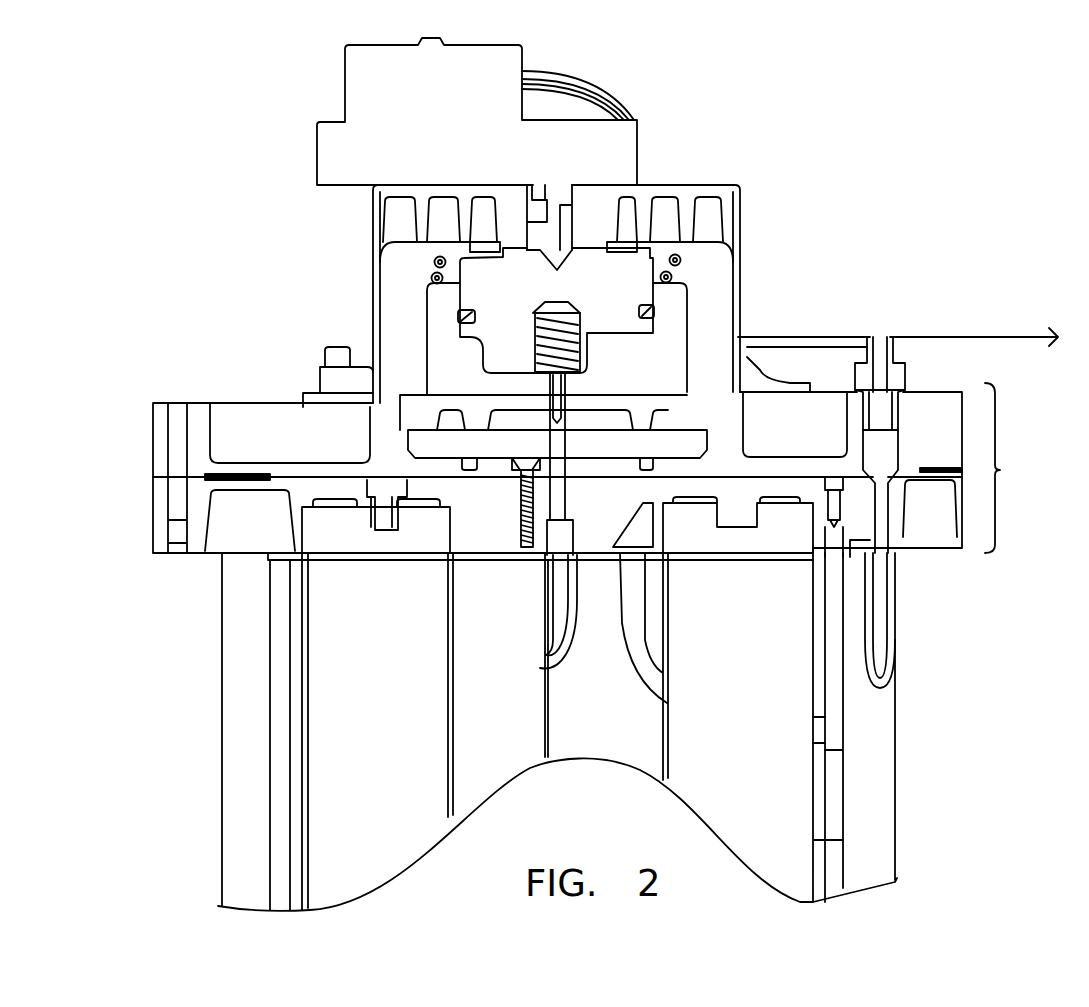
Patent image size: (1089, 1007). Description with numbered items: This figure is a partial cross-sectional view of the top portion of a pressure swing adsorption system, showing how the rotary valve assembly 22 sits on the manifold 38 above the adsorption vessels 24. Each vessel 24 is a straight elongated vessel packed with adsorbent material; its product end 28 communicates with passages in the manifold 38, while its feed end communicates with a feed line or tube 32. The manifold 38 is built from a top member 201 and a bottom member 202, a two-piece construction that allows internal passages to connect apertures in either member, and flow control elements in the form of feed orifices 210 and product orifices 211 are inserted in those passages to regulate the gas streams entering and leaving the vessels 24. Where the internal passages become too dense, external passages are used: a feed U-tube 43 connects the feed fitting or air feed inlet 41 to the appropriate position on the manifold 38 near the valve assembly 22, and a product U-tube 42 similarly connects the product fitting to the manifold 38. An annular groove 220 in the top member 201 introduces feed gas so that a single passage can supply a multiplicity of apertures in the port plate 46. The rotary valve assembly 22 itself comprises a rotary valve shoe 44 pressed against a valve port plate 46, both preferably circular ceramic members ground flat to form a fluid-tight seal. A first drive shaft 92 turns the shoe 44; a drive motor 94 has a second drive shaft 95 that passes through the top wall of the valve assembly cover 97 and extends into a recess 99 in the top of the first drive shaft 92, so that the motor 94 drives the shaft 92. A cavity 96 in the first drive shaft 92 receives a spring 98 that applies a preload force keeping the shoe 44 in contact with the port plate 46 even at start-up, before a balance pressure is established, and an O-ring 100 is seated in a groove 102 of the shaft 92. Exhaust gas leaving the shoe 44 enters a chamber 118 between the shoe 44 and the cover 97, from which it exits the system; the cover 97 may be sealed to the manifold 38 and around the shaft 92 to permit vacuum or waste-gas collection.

The rotary valve assembly 22 is at (407, 300).
The adsorption vessel 24 is at (843, 840).
The product end 28 is at (725, 608).
The feed line or tube 32 is at (843, 780).
The manifold 38 is at (997, 470).
The feed fitting or air feed inlet 41 is at (890, 337).
The product U-tube 42 is at (533, 670).
The feed U-tube 43 is at (873, 692).
The rotary valve shoe 44 is at (690, 300).
The valve port plate 46 is at (787, 337).
The first drive shaft 92 is at (500, 215).
The drive motor 94 is at (320, 122).
The second drive shaft 95 is at (562, 225).
The cavity 96 is at (537, 317).
The valve assembly cover 97 is at (698, 185).
The spring 98 is at (533, 348).
The recess 99 is at (503, 216).
The O-ring 100 is at (660, 313).
The groove 102 is at (640, 307).
The chamber 118 is at (700, 255).
The top member 201 is at (153, 437).
The bottom member 202 is at (153, 518).
The feed orifice 210 is at (848, 503).
The product orifice 211 is at (358, 522).
The annular groove 220 is at (470, 470).